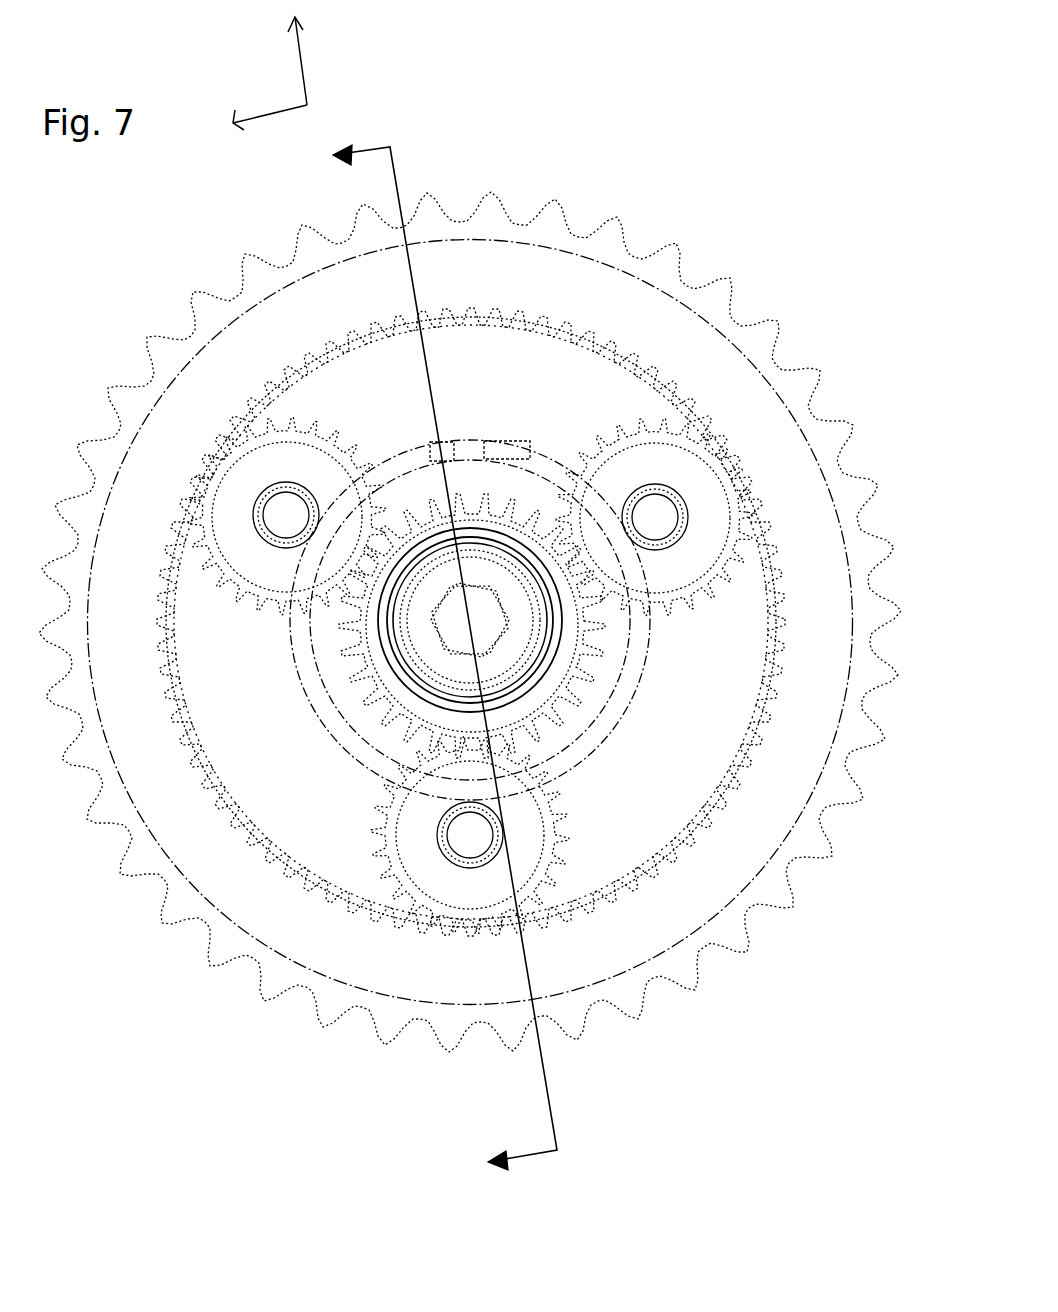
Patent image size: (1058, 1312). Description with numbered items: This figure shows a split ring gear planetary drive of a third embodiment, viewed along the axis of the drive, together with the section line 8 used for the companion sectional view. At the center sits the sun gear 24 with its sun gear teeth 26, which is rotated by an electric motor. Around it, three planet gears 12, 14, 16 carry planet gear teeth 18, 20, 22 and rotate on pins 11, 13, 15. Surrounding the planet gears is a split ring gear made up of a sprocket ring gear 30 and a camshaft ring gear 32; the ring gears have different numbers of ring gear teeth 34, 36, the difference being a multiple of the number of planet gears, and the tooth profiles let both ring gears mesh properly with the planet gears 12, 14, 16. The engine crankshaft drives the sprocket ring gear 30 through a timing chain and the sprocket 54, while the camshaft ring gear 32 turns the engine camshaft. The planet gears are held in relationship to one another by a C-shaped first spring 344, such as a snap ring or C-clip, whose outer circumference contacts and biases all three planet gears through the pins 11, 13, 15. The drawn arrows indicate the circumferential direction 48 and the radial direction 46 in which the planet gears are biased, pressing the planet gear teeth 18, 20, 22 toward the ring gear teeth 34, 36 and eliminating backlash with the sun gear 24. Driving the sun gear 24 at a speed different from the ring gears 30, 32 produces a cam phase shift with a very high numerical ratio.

The sprocket 54 is at (146, 332).
The sprocket ring gear 30 is at (762, 427).
The ring gear teeth 34 is at (535, 325).
The ring gear teeth 36 is at (523, 328).
The camshaft ring gear 32 is at (315, 878).
The planet gear teeth 18 is at (563, 807).
The sun gear teeth 26 is at (505, 505).
The sun gear 24 is at (557, 662).
The planet gear teeth 22 is at (303, 415).
The planet gear 16 is at (257, 446).
The pin 15 is at (301, 529).
The planet gear teeth 20 is at (595, 452).
The planet gear 14 is at (705, 575).
The pin 13 is at (670, 531).
The planet gear 12 is at (442, 912).
The first spring 344 is at (450, 801).
The pin 11 is at (486, 849).
The radial direction 46 is at (316, 61).
The circumferential direction 48 is at (270, 107).
The section line 8- 8 is at (434, 650).